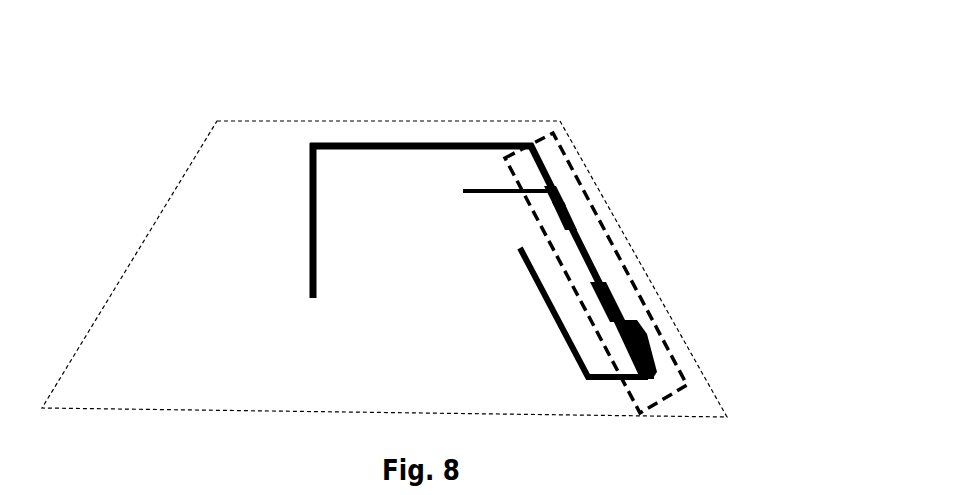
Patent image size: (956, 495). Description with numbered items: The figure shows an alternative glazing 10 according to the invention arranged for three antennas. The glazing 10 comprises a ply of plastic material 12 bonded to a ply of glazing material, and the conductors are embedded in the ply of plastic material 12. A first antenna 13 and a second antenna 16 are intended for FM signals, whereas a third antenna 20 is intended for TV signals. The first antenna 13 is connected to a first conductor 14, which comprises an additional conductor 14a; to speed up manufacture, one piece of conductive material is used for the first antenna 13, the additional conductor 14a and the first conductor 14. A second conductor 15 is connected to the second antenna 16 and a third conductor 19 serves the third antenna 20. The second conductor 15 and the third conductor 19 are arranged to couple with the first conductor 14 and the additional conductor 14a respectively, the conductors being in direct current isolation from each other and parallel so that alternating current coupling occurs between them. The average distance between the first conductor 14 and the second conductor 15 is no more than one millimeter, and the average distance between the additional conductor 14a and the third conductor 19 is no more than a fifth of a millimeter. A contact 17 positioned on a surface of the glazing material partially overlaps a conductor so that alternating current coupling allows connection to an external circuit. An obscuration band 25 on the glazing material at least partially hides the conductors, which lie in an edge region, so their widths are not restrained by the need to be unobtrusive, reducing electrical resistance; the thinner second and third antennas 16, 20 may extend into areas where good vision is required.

The glazing 10 is at (623, 95).
The ply of plastic material 12 is at (585, 153).
The first antenna 13 is at (308, 207).
The first conductor 14 is at (615, 292).
The additional conductor 14a is at (563, 208).
The second conductor 15 is at (650, 375).
The second antenna 16 is at (584, 350).
The contact 17 is at (657, 357).
The third conductor 19 is at (540, 188).
The third antenna 20 is at (463, 190).
The obscuration band 25 is at (613, 243).